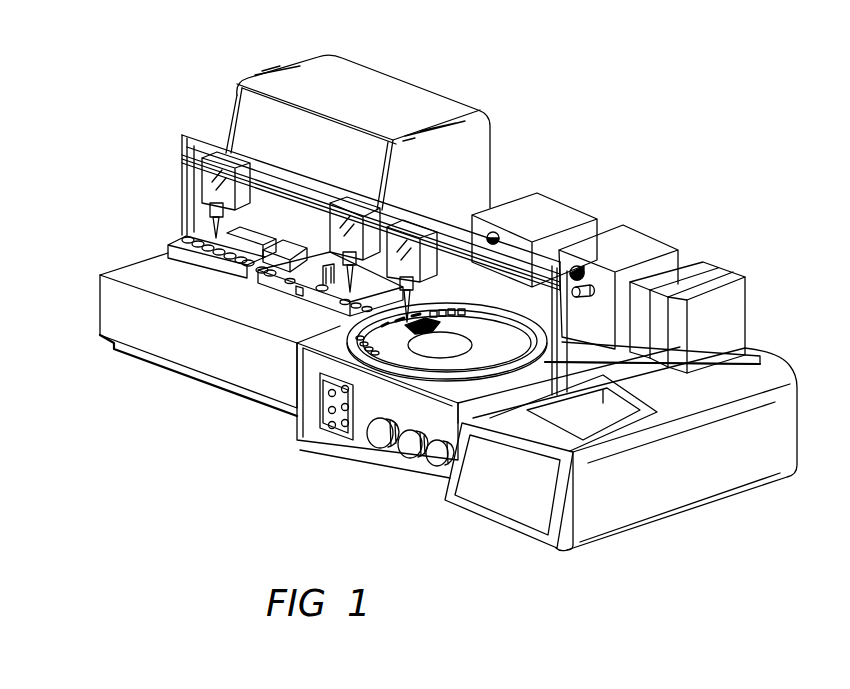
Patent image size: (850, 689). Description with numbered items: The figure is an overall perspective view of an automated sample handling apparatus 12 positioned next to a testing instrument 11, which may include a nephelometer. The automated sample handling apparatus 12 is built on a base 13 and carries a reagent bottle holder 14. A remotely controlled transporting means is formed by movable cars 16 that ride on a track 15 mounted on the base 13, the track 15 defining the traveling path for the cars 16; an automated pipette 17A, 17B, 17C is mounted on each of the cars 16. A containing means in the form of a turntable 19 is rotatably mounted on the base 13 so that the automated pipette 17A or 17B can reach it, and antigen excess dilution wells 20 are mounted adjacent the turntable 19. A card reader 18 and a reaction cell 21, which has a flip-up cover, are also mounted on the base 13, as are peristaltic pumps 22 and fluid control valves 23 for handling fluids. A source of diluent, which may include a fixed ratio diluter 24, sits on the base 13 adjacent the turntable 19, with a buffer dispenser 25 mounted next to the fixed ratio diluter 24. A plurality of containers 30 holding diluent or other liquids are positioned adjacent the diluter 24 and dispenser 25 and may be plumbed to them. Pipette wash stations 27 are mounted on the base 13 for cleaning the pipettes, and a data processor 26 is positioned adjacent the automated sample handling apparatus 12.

The testing instrument 11 is at (363, 62).
The automated sample handling apparatus 12 is at (238, 463).
The base 13 is at (104, 276).
The reagent bottle holder 14 is at (170, 236).
The track 15 is at (199, 139).
The movable car 16 is at (202, 180).
The automated pipette 17A is at (410, 288).
The automated pipette 17B is at (349, 254).
The automated pipette 17C is at (212, 217).
The card reader 18 is at (243, 261).
The turntable 19 is at (337, 282).
The antigen excess dilution wells 20 is at (298, 292).
The reaction cell 21 is at (270, 273).
The peristaltic pumps 22 is at (438, 470).
The fluid control valves 23 is at (345, 435).
The fixed ratio diluter 24 is at (560, 201).
The buffer dispenser 25 is at (645, 234).
The data processor 26 is at (798, 387).
The pipette wash stations 27 is at (255, 266).
The containers 30 is at (720, 273).